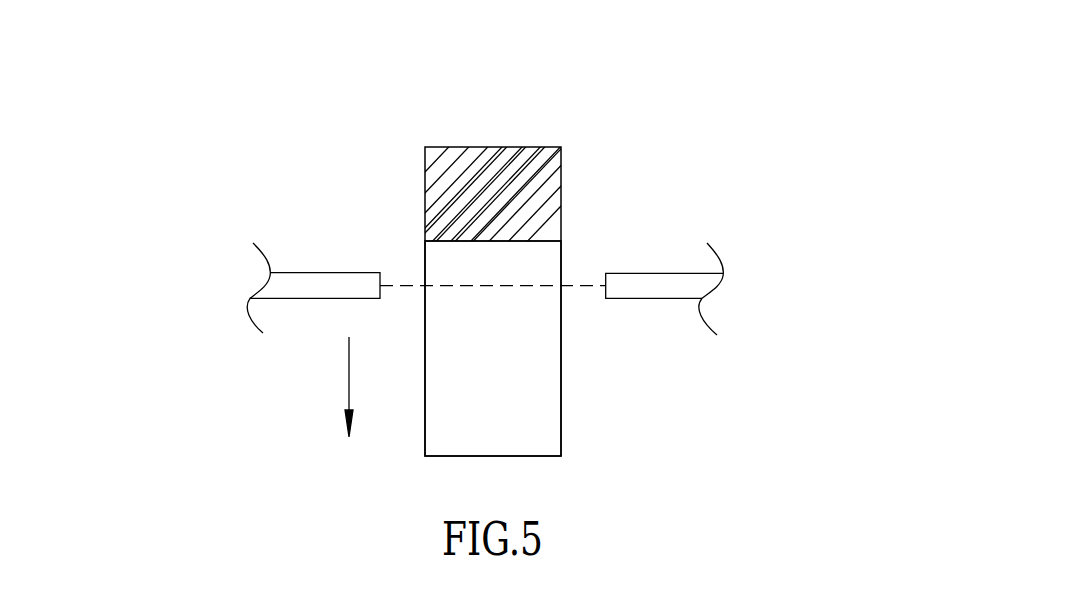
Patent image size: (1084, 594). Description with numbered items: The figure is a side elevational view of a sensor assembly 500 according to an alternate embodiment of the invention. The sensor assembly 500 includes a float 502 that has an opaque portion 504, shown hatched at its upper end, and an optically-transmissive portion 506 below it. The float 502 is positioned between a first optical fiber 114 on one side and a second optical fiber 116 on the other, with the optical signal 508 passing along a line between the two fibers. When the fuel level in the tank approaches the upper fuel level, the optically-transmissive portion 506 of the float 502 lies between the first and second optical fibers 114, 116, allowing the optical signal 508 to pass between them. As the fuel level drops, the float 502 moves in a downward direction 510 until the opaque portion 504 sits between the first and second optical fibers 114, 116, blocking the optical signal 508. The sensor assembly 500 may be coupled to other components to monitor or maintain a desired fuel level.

The sensor assembly 500 is at (619, 77).
The float 502 is at (438, 118).
The opaque portion 504 is at (561, 197).
The optically-transmissive portion 506 is at (561, 382).
The optical signal 508 is at (497, 286).
The downward direction 510 is at (349, 370).
The first optical fiber 114 is at (342, 272).
The second optical fiber 116 is at (635, 272).